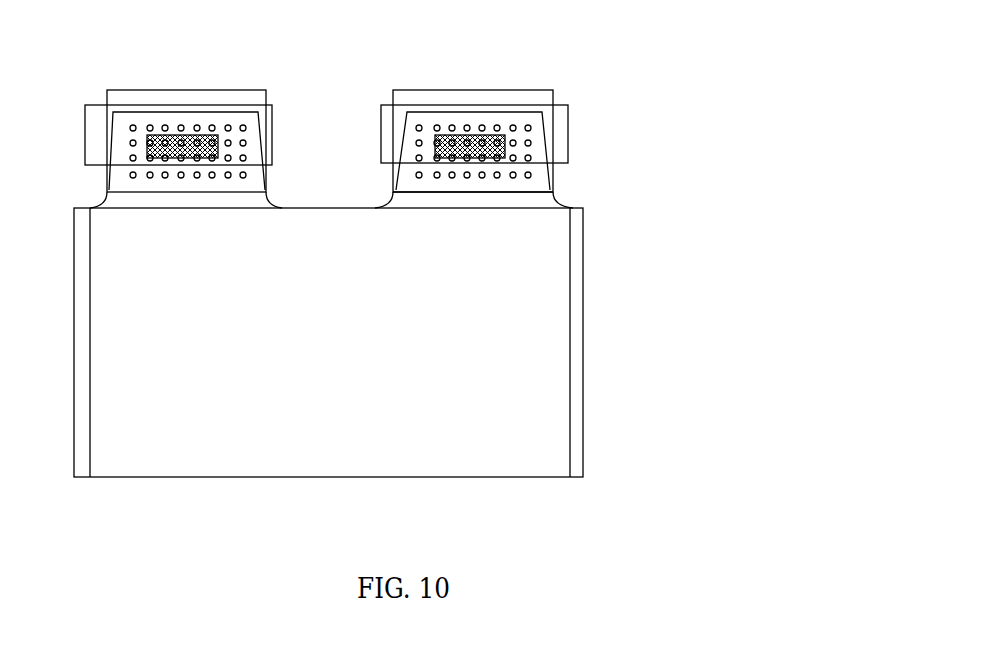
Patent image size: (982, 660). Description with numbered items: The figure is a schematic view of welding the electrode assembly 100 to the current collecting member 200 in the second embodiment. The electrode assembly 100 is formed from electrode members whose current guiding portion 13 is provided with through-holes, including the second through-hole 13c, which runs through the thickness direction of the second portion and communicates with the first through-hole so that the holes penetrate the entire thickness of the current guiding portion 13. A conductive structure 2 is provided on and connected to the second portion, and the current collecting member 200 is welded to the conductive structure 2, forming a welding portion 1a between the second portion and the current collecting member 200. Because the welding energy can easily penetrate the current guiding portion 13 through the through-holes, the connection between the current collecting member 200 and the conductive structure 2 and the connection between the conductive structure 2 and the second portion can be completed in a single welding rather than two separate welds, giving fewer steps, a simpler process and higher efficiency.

The electrode assembly 100 is at (510, 340).
The current collecting member 200 is at (562, 113).
The conductive structure 2 is at (472, 100).
The welding portion 1a is at (493, 128).
The current guiding portion 13 is at (525, 202).
The second through-hole 13c is at (533, 175).